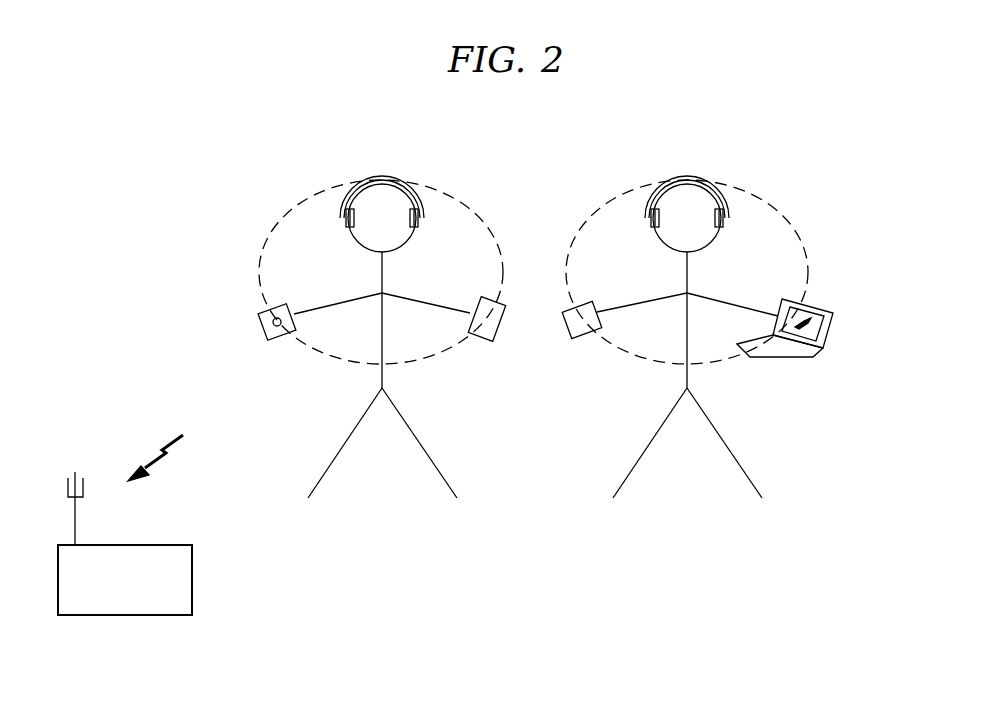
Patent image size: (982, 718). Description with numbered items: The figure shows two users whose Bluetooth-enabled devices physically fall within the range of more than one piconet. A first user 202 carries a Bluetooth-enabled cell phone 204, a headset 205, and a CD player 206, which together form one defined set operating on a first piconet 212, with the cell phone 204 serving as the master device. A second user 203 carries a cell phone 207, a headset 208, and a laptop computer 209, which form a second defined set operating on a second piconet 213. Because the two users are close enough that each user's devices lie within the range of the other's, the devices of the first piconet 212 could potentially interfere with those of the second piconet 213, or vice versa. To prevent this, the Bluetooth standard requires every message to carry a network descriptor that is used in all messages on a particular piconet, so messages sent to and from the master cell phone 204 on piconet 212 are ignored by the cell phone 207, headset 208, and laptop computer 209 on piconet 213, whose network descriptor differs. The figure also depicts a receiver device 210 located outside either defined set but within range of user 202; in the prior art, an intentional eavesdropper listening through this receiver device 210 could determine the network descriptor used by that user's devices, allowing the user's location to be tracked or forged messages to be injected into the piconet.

The user 202 is at (439, 282).
The user 203 is at (743, 282).
The cell phone 204 is at (488, 344).
The headset 205 is at (408, 187).
The CD player 206 is at (266, 341).
The cell phone 207 is at (571, 341).
The headset 208 is at (713, 187).
The laptop computer 209 is at (789, 362).
The receiver device 210 is at (107, 616).
The piconet 212 is at (485, 217).
The piconet 213 is at (791, 217).